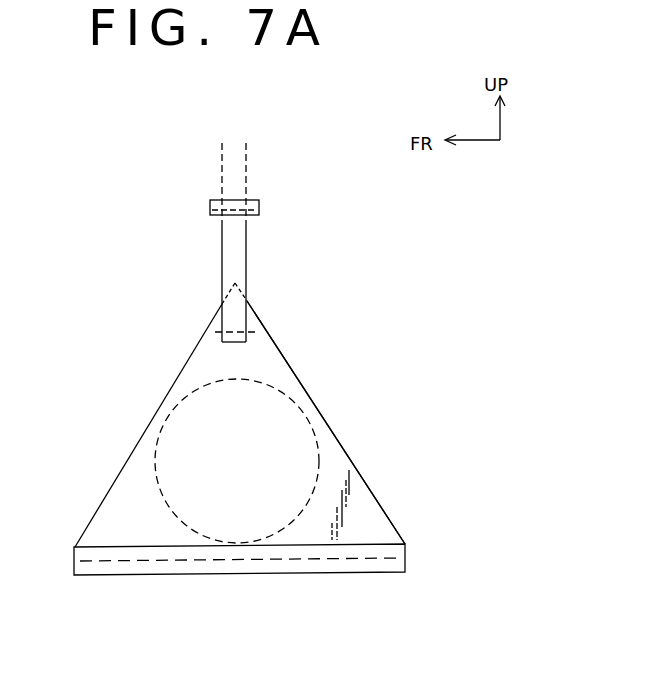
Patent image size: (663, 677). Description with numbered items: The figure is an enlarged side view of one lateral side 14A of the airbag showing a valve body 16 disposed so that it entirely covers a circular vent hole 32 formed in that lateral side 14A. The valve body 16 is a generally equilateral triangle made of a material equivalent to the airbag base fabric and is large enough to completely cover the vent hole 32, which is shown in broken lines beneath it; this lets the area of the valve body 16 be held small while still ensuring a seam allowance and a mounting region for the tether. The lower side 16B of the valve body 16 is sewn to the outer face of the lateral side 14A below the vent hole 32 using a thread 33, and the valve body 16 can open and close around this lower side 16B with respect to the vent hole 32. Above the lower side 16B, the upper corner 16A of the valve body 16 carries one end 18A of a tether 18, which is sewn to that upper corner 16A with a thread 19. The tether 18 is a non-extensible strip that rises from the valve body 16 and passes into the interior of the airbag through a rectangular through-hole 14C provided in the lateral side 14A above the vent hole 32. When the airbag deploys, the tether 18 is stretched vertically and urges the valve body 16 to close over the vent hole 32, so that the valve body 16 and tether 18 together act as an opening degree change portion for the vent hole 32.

The lateral side 14A is at (360, 307).
The through-hole 14C is at (260, 209).
The valve body 16 is at (301, 378).
The upper corner 16A is at (262, 320).
The lower side 16B is at (193, 577).
The tether 18 is at (252, 262).
The end 18A is at (237, 343).
The thread 19 is at (219, 332).
The vent hole 32 is at (180, 436).
The thread 33 is at (343, 561).